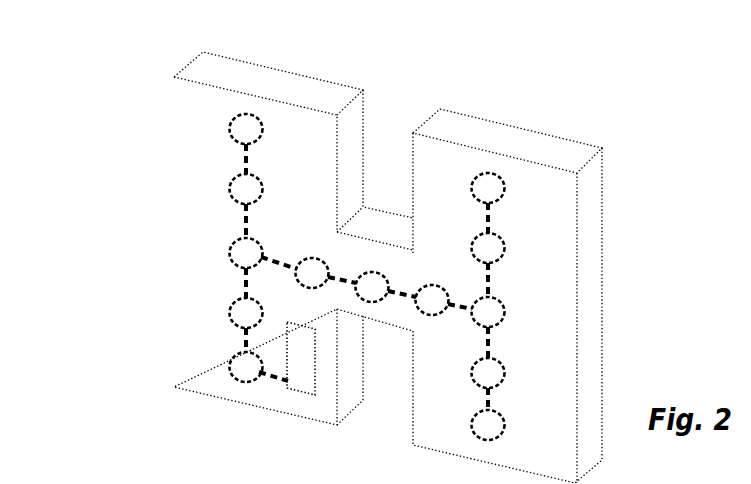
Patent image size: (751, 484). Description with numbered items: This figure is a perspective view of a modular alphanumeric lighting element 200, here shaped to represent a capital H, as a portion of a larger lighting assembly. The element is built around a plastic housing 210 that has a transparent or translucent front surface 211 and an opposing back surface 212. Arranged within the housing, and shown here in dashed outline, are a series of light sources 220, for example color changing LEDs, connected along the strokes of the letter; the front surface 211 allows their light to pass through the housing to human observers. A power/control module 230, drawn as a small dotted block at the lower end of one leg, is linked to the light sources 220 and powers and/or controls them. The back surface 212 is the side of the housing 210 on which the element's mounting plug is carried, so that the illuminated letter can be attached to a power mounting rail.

The device 200 is at (138, 62).
The plastic housing 210 is at (228, 72).
The front surface 211 is at (198, 123).
The back surface 212 is at (352, 87).
The light sources 220 is at (232, 242).
The power/control module 230 is at (300, 387).